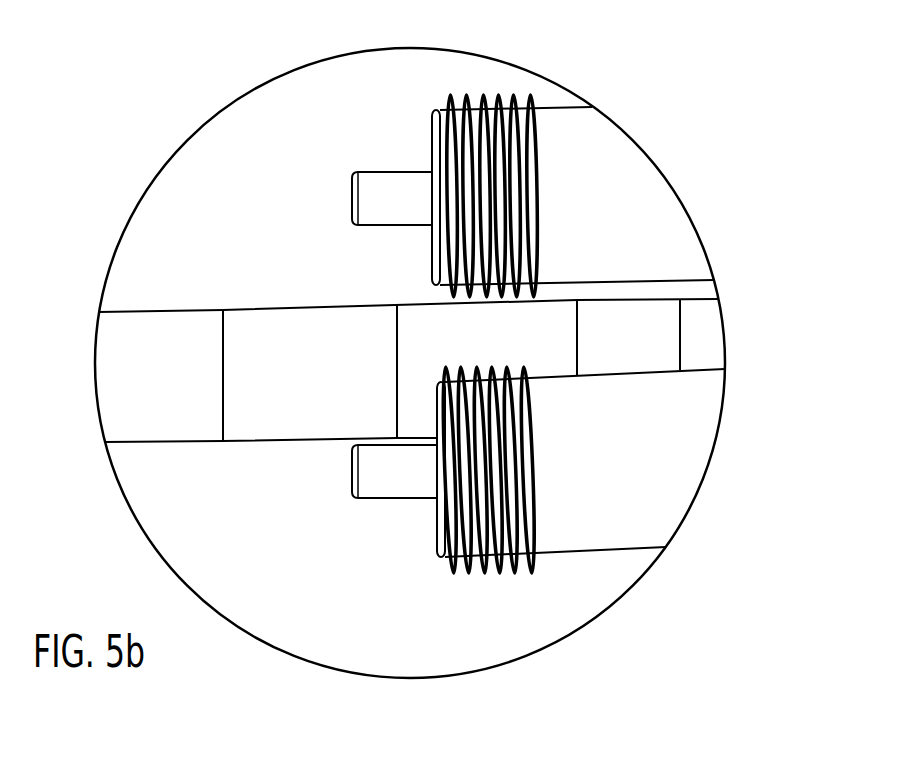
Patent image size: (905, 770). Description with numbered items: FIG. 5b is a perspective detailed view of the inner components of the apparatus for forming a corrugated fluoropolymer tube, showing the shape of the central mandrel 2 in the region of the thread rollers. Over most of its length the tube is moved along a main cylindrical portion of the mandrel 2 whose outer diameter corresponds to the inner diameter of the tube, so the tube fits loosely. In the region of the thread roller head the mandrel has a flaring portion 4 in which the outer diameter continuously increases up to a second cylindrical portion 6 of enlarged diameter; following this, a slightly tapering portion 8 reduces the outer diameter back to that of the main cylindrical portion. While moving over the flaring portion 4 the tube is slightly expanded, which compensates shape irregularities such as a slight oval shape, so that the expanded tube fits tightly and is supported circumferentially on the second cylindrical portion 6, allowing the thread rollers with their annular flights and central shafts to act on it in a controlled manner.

The central mandrel 2 is at (204, 283).
The flaring portion 4 is at (663, 299).
The second cylindrical portion of enlarged diameter 6 is at (501, 350).
The slightly tapering portion 8 is at (275, 441).